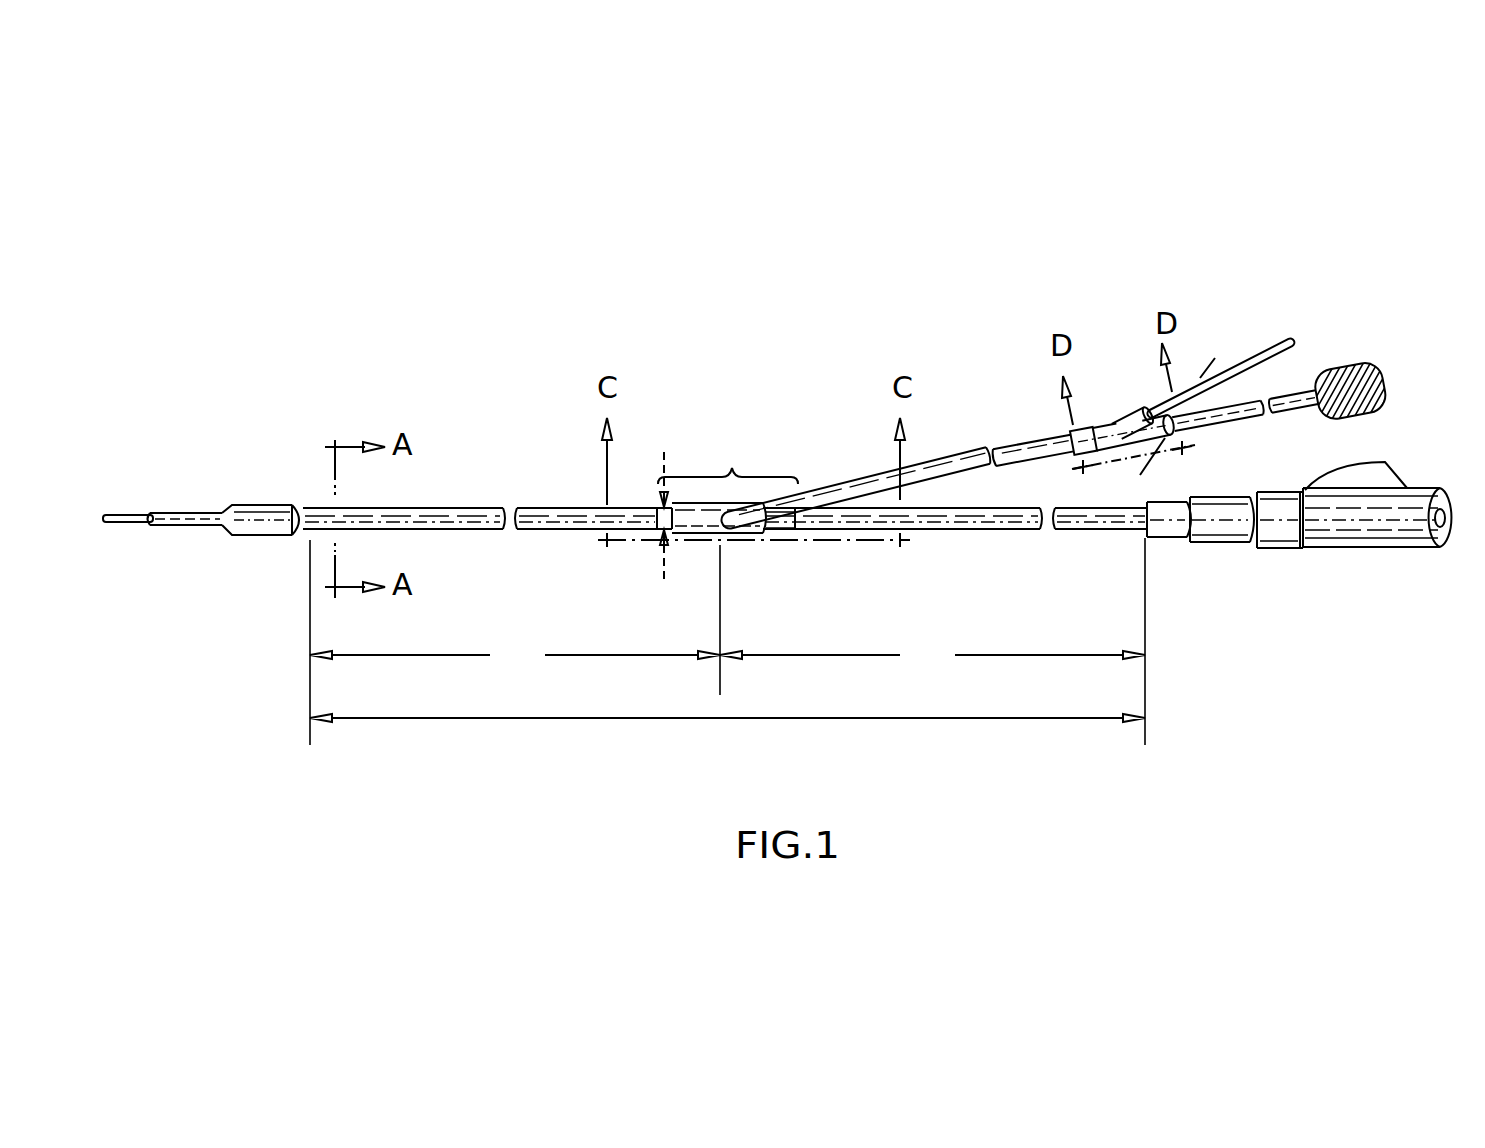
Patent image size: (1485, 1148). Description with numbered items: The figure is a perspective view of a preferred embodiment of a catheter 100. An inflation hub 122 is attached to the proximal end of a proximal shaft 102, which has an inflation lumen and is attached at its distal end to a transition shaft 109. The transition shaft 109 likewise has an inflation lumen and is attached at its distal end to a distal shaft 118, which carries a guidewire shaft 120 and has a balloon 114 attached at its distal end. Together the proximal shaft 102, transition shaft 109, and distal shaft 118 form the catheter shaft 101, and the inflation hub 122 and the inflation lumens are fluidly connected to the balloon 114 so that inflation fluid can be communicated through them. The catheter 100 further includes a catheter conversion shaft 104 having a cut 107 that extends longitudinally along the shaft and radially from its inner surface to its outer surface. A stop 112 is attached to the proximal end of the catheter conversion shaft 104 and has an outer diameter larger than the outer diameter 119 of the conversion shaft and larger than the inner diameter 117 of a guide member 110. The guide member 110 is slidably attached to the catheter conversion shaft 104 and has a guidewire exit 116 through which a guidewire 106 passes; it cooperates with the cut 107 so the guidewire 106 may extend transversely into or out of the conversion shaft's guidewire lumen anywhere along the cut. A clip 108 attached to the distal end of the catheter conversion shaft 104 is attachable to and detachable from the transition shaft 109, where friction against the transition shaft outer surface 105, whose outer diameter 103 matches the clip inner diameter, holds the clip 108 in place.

The catheter 100 is at (770, 283).
The catheter shaft 101 is at (730, 722).
The proximal shaft 102 is at (932, 657).
The transition shaft outer diameter 103 is at (669, 500).
The catheter conversion shaft 104 is at (1028, 326).
The transition shaft outer surface 105 is at (790, 520).
The guidewire 106 is at (123, 517).
The cut 107 is at (858, 482).
The clip 108 is at (703, 517).
The transition shaft 109 is at (732, 467).
The guide member 110 is at (1112, 428).
The stop 112 is at (1350, 387).
The balloon 114 is at (250, 513).
The guidewire exit 116 is at (1148, 417).
The inner diameter 117 is at (1155, 458).
The distal shaft 118 is at (515, 657).
The outer diameter 119 is at (1033, 443).
The guidewire shaft 120 is at (185, 517).
The inflation hub 122 is at (1350, 513).